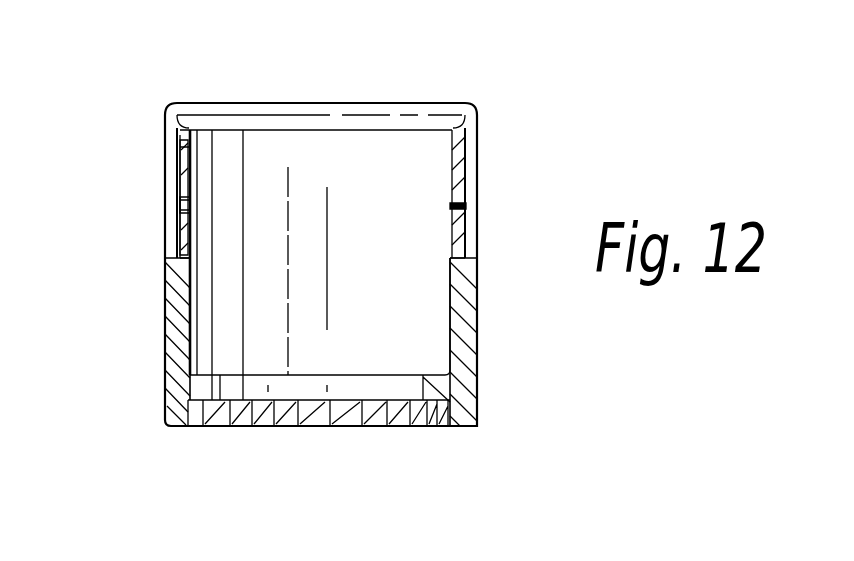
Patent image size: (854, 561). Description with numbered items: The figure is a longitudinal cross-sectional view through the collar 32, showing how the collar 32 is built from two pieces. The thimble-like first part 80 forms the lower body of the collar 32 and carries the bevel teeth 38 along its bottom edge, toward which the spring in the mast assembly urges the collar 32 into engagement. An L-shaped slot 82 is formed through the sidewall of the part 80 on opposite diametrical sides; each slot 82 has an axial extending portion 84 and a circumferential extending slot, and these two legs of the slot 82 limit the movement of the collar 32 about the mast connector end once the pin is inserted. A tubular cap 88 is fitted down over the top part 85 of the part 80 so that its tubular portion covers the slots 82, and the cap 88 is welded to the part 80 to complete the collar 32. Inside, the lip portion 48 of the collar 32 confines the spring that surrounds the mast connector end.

The collar 32 is at (483, 188).
The tubular cap 88 is at (347, 102).
The top part 85 is at (467, 147).
The first part 80 is at (165, 308).
The lip portion 48 is at (208, 378).
The bevel teeth 38 is at (276, 426).
The axial extending portion 84 is at (167, 165).
The L-shaped slot 82 is at (185, 188).